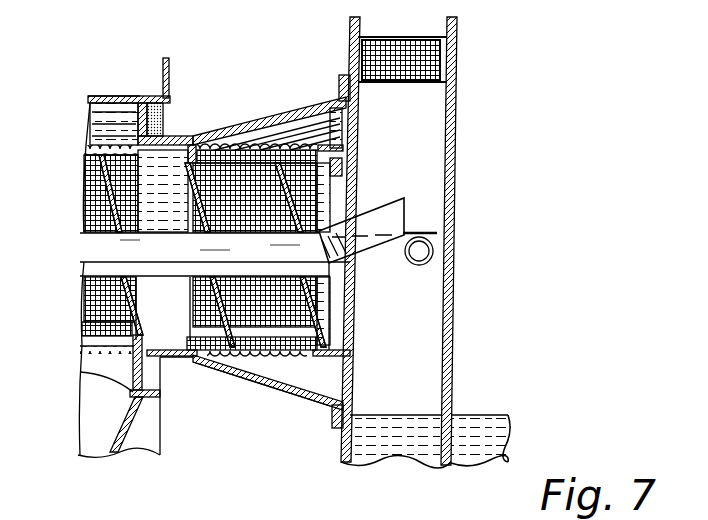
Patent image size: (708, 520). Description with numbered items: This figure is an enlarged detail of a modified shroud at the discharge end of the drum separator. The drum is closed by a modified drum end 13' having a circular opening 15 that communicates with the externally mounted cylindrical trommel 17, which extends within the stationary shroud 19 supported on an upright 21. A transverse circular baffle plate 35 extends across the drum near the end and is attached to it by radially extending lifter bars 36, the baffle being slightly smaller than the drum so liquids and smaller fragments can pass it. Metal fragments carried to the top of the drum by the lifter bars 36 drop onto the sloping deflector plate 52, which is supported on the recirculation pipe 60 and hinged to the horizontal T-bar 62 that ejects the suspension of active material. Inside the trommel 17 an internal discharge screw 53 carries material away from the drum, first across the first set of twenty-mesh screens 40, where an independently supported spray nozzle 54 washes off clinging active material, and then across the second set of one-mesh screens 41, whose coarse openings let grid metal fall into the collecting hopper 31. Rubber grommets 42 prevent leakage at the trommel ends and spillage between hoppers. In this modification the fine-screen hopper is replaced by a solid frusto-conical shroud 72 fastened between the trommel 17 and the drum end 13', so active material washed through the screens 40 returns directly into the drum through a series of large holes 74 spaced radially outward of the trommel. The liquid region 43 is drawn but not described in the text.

The modified drum end 13' is at (365, 47).
The circular opening 15 is at (354, 166).
The cylindrical trommel 17 is at (170, 340).
The stationary shroud 19 is at (104, 90).
The upright 21 is at (163, 70).
The collecting hopper 31 is at (105, 408).
The transverse circular baffle plate 35 is at (458, 156).
The radially extending lifter bar 36 is at (431, 97).
The first set of 20-mesh screens 40 is at (300, 302).
The second set of 1-mesh screens 41 is at (100, 305).
The rubber grommet 42 is at (90, 116).
The liquid bath 43 is at (468, 400).
The sloping deflector plate 52 is at (422, 210).
The internal discharge screw 53 is at (110, 200).
The spray nozzle 54 is at (100, 270).
The recirculation pipe 60 is at (98, 244).
The horizontal T-bar 62 is at (436, 258).
The frusto-conical shroud 72 is at (286, 112).
The large holes 74 is at (352, 112).